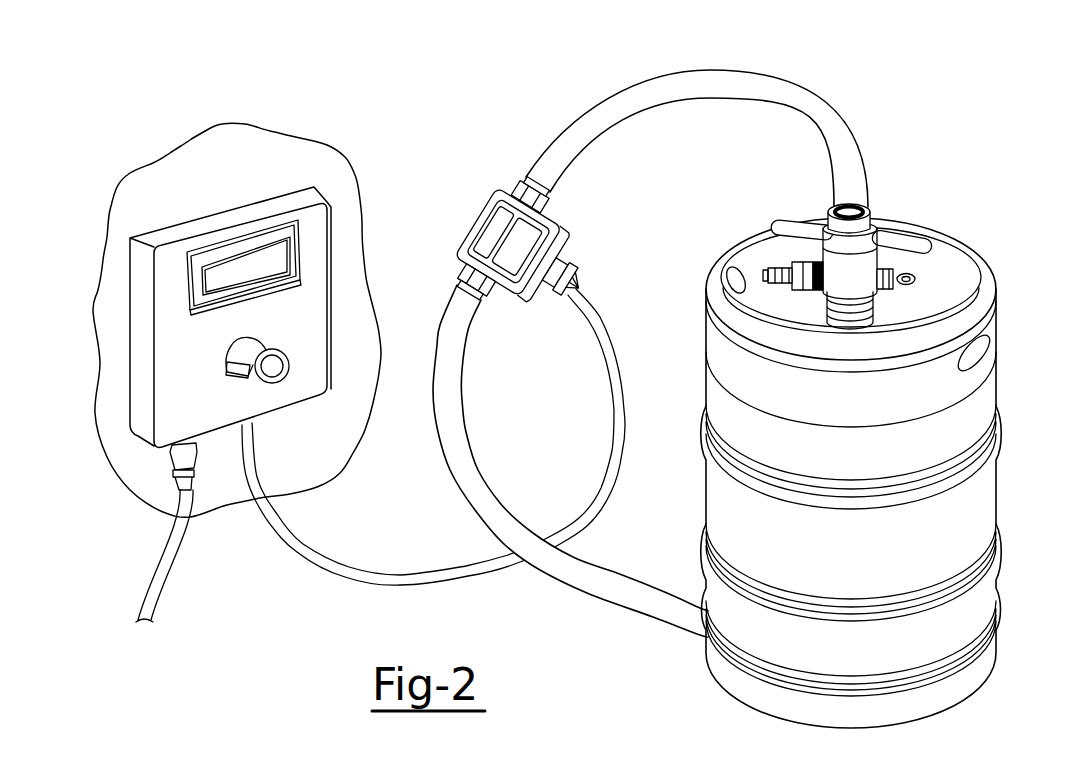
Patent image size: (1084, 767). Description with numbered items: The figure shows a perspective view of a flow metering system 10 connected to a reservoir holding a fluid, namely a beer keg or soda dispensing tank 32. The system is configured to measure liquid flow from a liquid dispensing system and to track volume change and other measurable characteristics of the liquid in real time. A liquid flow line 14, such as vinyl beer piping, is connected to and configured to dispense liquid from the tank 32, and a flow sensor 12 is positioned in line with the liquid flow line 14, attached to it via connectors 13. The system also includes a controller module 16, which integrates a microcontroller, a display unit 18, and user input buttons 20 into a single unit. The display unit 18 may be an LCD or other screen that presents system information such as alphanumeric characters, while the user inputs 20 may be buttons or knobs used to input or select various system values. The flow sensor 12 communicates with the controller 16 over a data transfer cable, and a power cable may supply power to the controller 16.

The flow metering system 10 is at (901, 112).
The flow sensor 12 is at (432, 220).
The connectors 13 is at (522, 184).
The liquid flow line 14 is at (648, 95).
The controller module 16 is at (168, 372).
The display unit 18 is at (292, 266).
The user input buttons 20 is at (273, 367).
The beer keg or soda dispensing tank 32 is at (728, 514).